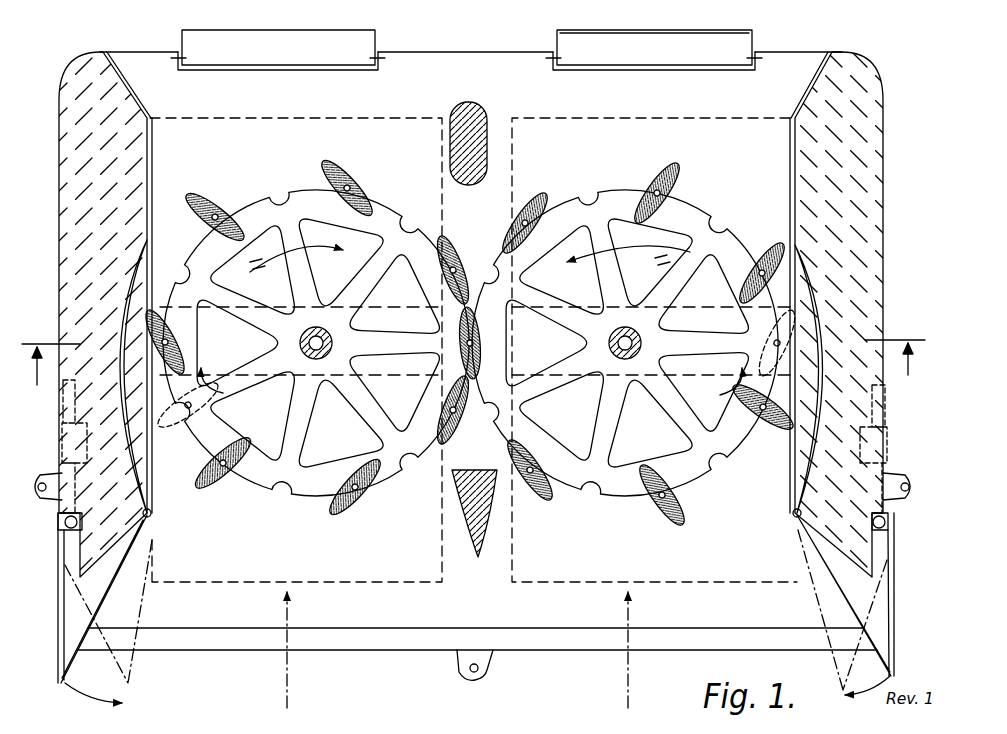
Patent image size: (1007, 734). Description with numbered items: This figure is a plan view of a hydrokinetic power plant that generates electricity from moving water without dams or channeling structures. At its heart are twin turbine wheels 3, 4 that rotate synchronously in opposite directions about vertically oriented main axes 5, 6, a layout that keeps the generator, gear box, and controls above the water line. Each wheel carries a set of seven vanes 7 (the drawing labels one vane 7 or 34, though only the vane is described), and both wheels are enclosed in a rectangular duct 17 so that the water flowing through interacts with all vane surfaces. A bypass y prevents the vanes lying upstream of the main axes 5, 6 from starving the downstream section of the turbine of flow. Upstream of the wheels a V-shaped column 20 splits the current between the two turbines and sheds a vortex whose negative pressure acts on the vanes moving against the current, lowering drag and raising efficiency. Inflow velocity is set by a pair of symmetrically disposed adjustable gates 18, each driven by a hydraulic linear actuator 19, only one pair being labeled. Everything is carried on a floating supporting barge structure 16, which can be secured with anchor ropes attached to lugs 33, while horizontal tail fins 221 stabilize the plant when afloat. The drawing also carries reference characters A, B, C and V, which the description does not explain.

The turbine wheel 3 is at (311, 323).
The turbine wheel 4 is at (641, 341).
The main axis 5 is at (315, 346).
The main axis 6 is at (625, 346).
The vanes 7 is at (303, 187).
The blade / hammer 34 is at (337, 172).
The floating supporting barge structure 16 is at (860, 205).
The rectangular duct 17 is at (150, 512).
The adjustable gate 18 is at (72, 612).
The hydraulic linear actuator 19 is at (870, 455).
The V-shaped column 20 is at (477, 497).
The horizontal tail fins 221 is at (653, 48).
The lugs 33 is at (52, 483).
The left deflector plate A is at (133, 376).
The right deflector plate B is at (809, 379).
The section line C- C is at (473, 350).
The flap swing angle V is at (476, 614).
The bypass y is at (808, 435).